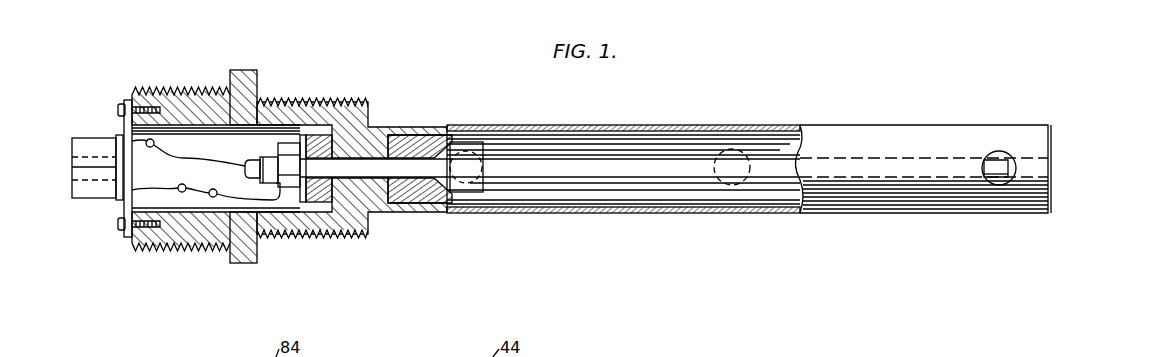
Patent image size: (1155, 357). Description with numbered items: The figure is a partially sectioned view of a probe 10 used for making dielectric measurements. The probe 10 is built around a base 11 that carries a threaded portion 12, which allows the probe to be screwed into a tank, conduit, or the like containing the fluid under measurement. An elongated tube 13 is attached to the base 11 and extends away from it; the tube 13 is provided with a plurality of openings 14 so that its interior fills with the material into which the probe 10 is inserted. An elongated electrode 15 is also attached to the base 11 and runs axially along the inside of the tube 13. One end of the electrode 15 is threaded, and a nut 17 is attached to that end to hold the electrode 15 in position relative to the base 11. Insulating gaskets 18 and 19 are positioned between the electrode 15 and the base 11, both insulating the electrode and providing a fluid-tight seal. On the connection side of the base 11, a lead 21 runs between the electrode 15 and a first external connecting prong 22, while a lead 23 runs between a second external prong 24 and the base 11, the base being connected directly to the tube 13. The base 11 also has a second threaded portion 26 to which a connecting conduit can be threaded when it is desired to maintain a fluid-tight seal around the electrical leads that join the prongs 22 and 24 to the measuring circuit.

The probe 10 is at (463, 110).
The base 11 is at (251, 70).
The threaded portion 12 is at (337, 98).
The elongated tube 13 is at (866, 126).
The openings 14 is at (735, 150).
The elongated electrode 15 is at (563, 172).
The nut 17 is at (292, 145).
The insulating gasket 18 is at (320, 204).
The insulating gasket 19 is at (417, 212).
The lead 21 is at (170, 192).
The first external connecting prong 22 is at (85, 193).
The lead 23 is at (153, 147).
The second external prong 24 is at (86, 150).
The second threaded portion 26 is at (172, 87).